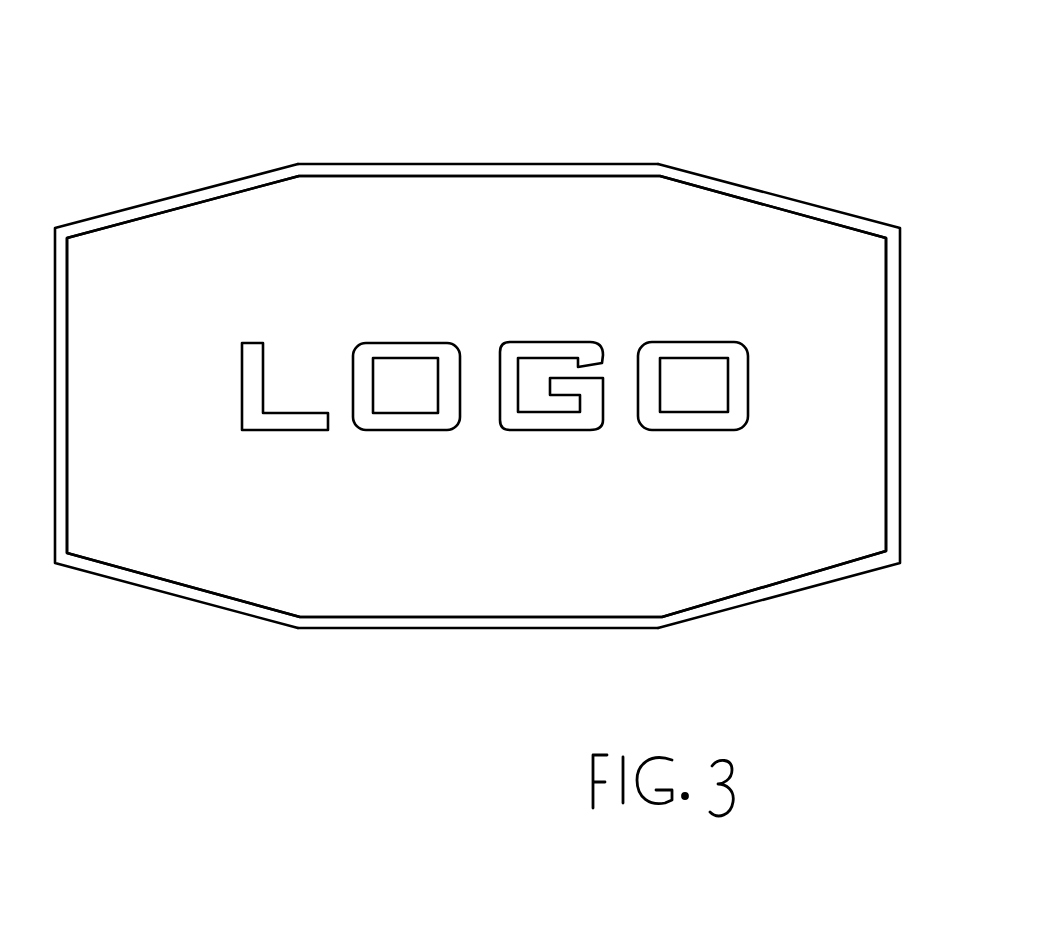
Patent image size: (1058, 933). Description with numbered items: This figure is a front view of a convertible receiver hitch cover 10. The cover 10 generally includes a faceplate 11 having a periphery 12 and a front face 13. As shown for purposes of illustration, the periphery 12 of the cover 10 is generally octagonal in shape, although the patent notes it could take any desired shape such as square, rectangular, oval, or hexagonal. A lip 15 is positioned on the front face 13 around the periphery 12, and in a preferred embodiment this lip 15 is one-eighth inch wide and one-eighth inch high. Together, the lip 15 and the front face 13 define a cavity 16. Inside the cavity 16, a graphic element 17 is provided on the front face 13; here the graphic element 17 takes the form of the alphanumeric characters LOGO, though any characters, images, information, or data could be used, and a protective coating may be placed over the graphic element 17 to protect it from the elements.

The convertible receiver hitch cover 10 is at (658, 117).
The faceplate 11 is at (452, 636).
The periphery 12 is at (490, 164).
The front face 13 is at (661, 508).
The lip 15 is at (187, 592).
The cavity 16 is at (112, 564).
The graphic element 17 is at (377, 350).